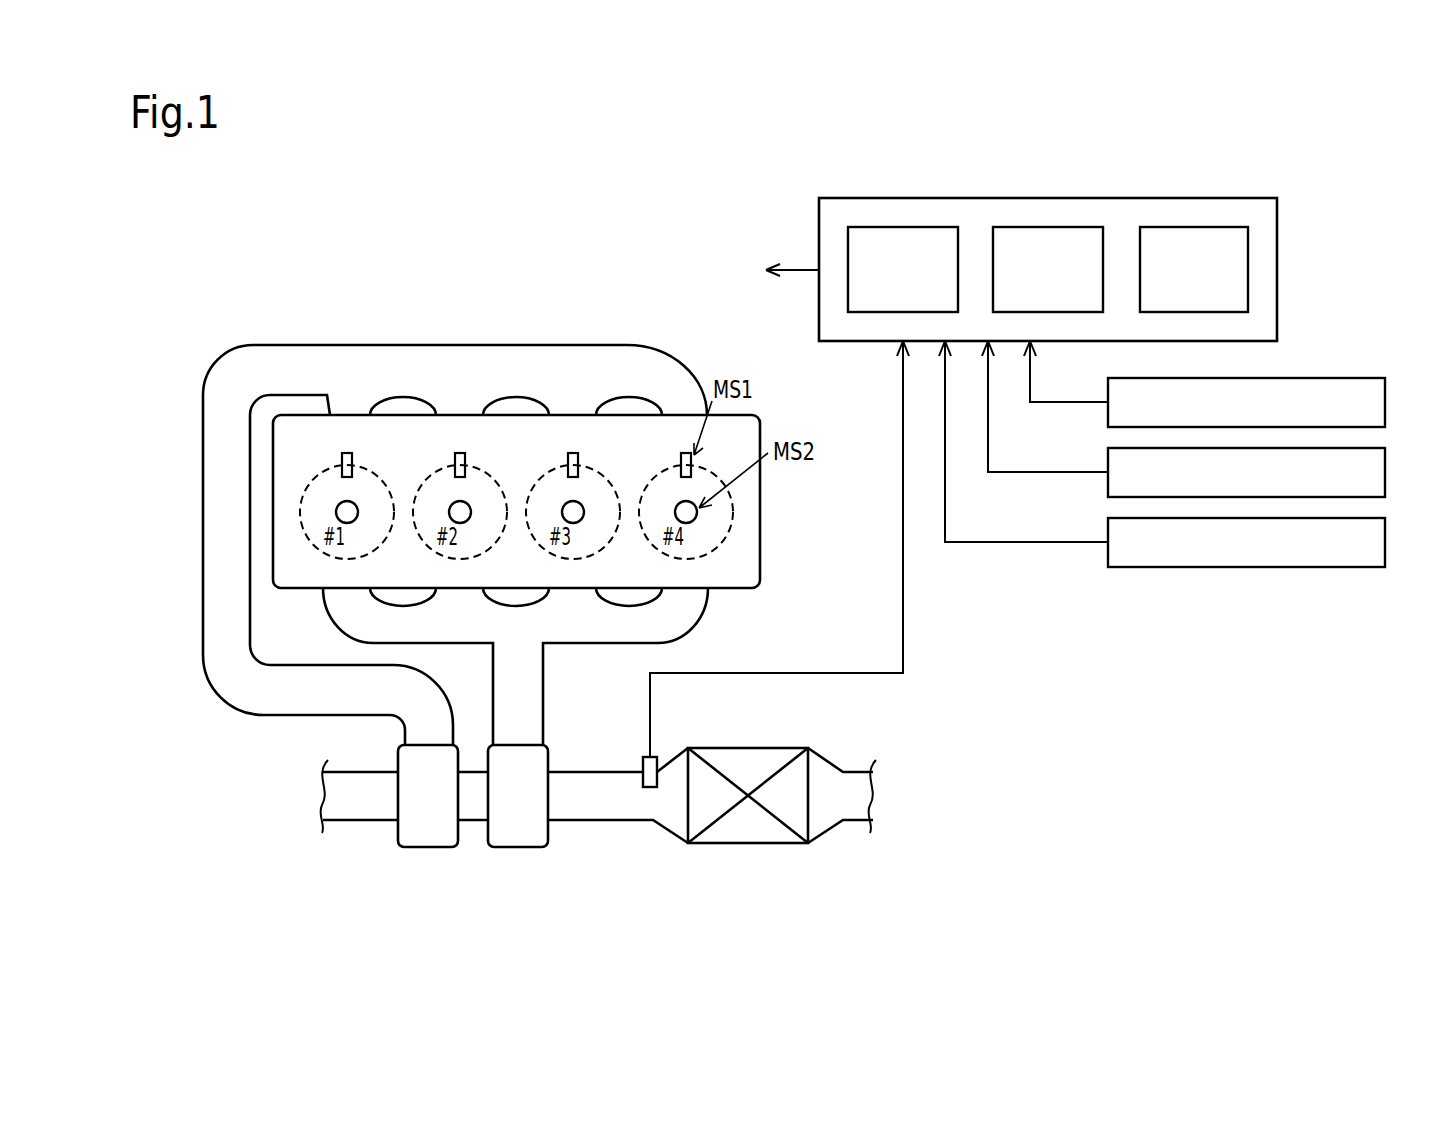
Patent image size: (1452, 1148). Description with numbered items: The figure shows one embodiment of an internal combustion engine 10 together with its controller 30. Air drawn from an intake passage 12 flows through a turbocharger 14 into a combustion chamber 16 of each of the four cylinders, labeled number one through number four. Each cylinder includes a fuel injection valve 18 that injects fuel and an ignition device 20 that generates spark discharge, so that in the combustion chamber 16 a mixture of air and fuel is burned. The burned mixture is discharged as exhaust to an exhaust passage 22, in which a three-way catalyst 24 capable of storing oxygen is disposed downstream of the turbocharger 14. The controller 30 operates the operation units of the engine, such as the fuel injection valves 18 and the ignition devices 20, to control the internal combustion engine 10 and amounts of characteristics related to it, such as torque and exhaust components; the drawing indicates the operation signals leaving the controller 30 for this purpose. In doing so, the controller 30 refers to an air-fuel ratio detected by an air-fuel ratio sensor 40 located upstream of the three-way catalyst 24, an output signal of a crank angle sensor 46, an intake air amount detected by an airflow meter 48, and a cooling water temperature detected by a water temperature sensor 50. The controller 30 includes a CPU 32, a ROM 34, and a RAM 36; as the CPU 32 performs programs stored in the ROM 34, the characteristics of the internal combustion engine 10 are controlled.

The internal combustion engine 10 is at (571, 289).
The intake passage 12 is at (357, 818).
The turbocharger 14 is at (473, 852).
The combustion chamber 16 is at (303, 500).
The fuel injection valve 18 is at (347, 453).
The ignition device 20 is at (357, 513).
The exhaust passage 22 is at (690, 628).
The three-way catalyst 24 is at (743, 832).
The controller 30 is at (968, 237).
The CPU 32 is at (903, 227).
The ROM 34 is at (1048, 227).
The RAM 36 is at (1194, 227).
The air-fuel ratio sensor 40 is at (645, 757).
The crank angle sensor 46 is at (1385, 405).
The airflow meter 48 is at (1385, 475).
The water temperature sensor 50 is at (1385, 545).